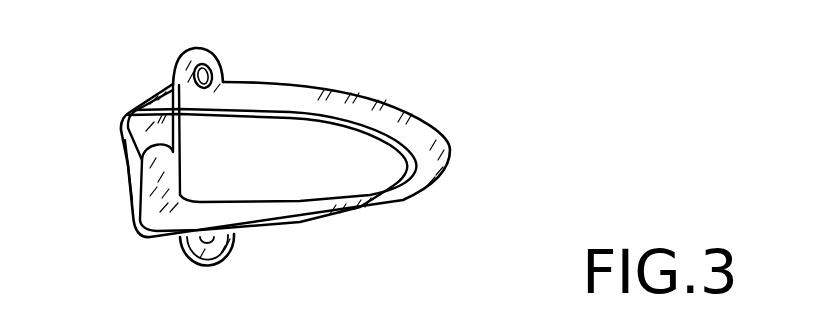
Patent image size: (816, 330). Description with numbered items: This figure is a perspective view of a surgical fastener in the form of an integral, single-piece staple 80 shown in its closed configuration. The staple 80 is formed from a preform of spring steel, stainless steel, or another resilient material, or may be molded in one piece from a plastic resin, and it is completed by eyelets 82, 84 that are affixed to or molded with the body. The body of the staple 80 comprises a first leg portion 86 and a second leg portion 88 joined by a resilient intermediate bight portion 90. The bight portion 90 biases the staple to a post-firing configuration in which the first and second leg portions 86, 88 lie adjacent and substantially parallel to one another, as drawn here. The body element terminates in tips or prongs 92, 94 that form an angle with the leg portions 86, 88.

The staple 80 is at (441, 68).
The eyelet 82 is at (183, 257).
The eyelet 84 is at (182, 56).
The first leg portion 86 is at (317, 210).
The second leg portion 88 is at (298, 86).
The bight portion 90 is at (438, 155).
The prong 92 is at (137, 193).
The prong 94 is at (123, 148).